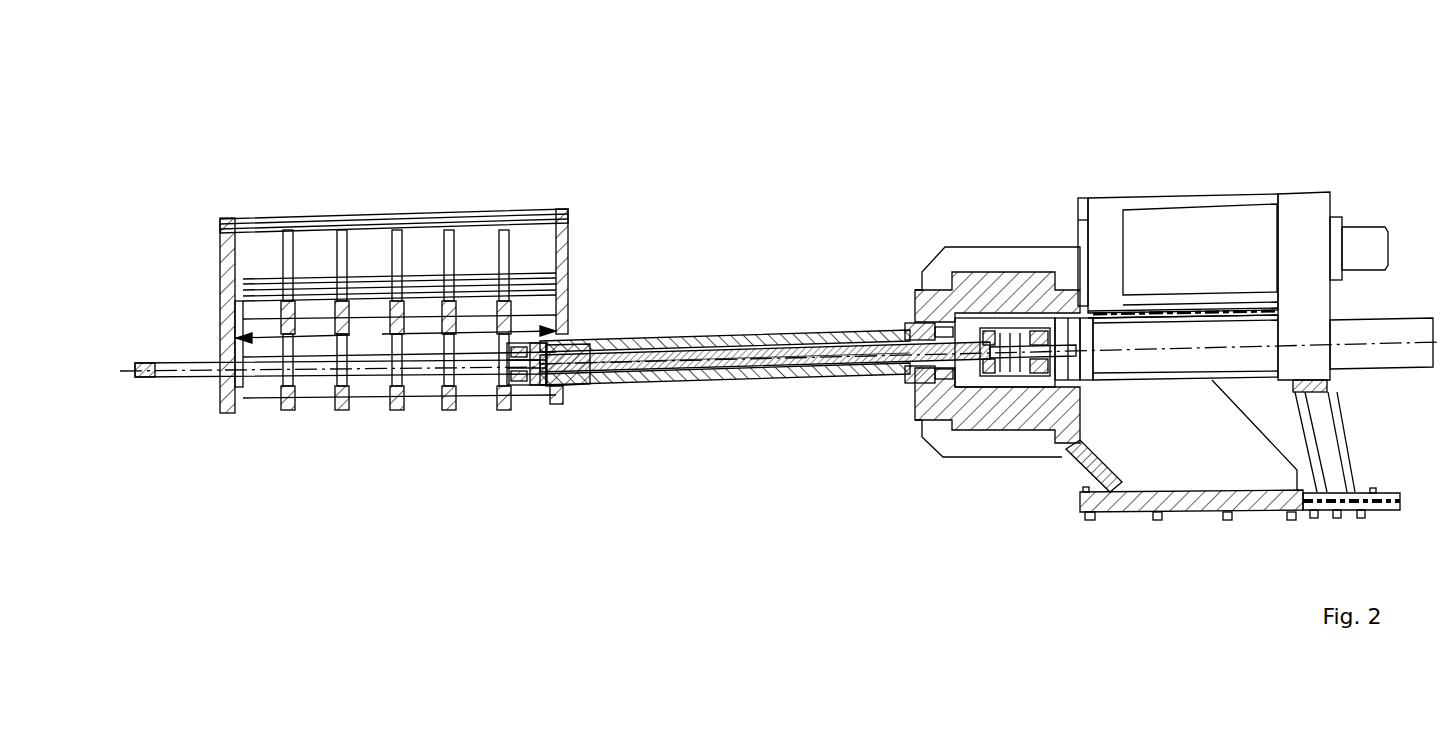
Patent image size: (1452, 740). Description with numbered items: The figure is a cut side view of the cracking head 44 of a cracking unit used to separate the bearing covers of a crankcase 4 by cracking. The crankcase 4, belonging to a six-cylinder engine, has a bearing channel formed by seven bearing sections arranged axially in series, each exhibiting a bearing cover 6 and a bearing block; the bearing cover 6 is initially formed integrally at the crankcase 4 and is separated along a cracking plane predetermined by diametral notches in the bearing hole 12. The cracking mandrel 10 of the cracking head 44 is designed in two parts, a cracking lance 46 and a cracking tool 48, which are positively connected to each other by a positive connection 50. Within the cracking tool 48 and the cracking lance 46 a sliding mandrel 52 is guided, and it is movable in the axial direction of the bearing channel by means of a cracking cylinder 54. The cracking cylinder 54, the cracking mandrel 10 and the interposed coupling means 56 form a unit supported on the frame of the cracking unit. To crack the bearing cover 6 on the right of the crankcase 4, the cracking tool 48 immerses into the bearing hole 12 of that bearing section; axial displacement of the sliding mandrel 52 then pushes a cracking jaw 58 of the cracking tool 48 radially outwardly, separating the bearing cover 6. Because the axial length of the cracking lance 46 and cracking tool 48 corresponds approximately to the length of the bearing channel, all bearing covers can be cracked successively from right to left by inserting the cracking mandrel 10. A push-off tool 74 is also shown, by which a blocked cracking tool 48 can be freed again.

The crankcase 4 is at (233, 218).
The bearing cover 6 is at (557, 388).
The cracking mandrel 10 is at (806, 402).
The bearing hole 12 is at (565, 209).
The cracking head 44 is at (997, 230).
The cracking lance 46 is at (733, 382).
The cracking tool 48 is at (587, 390).
The positive connection 50 is at (606, 339).
The sliding mandrel 52 is at (858, 380).
The cracking cylinder 54 is at (1147, 360).
The coupling means 56 is at (987, 365).
The cracking jaw 58 is at (550, 388).
The push-off tool 74 is at (316, 362).